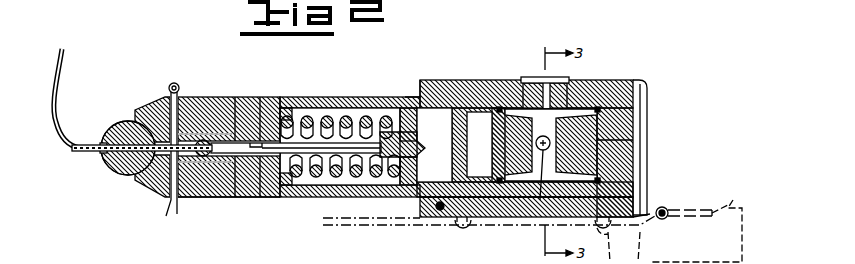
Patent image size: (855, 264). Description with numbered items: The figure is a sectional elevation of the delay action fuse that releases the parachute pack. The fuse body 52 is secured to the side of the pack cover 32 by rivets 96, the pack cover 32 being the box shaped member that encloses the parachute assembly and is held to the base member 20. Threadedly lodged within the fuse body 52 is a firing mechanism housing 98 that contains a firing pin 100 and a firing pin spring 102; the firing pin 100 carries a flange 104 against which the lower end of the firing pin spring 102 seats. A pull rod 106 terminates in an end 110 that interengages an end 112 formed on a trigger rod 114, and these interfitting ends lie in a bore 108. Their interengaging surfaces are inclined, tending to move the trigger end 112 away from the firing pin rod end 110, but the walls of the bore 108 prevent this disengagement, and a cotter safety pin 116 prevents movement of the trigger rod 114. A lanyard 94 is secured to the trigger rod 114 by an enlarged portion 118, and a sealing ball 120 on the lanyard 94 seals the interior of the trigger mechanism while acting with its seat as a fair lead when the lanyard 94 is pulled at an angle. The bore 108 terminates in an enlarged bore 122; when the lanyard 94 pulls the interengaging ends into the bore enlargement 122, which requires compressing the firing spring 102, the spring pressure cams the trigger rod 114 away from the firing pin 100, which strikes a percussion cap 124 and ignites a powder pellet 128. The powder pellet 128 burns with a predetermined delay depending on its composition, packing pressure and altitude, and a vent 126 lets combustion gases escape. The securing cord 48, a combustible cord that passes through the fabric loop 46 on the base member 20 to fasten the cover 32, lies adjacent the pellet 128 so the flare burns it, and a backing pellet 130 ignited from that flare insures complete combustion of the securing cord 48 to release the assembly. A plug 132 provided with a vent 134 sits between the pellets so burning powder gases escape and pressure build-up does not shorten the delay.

The base member 20 is at (738, 203).
The pack cover 32 is at (402, 227).
The loop 46 is at (675, 203).
The securing member 48 is at (662, 174).
The fuse body 52 is at (612, 78).
The lanyard 94 is at (63, 125).
The rivets 96 is at (461, 230).
The firing mechanism housing 98 is at (372, 97).
The firing pin 100 is at (432, 144).
The firing pin spring 102 is at (308, 118).
The flange 104 is at (408, 95).
The pull rod 106 is at (288, 106).
The bore 108 is at (242, 97).
The end of pull rod 110 is at (257, 97).
The end of trigger rod 112 is at (272, 197).
The trigger rod 114 is at (198, 97).
The cotter safety pin 116 is at (170, 85).
The enlarged portion 118 is at (203, 197).
The sealing ball 120 is at (113, 177).
The enlarged bore 122 is at (222, 197).
The percussion cap 124 is at (452, 148).
The vent 126 is at (485, 110).
The powder pellet 128 is at (502, 106).
The backing pellet 130 is at (588, 85).
The plug 132 is at (533, 87).
The vent 134 is at (528, 77).